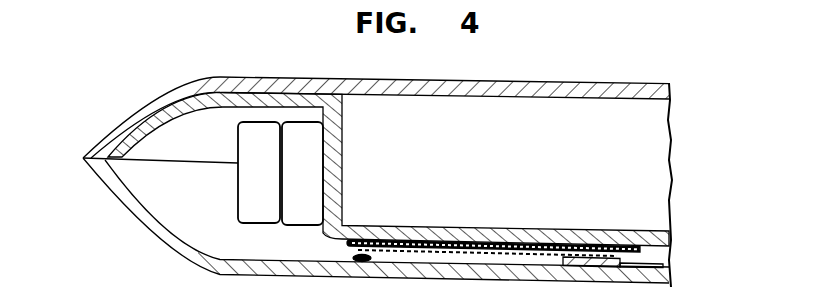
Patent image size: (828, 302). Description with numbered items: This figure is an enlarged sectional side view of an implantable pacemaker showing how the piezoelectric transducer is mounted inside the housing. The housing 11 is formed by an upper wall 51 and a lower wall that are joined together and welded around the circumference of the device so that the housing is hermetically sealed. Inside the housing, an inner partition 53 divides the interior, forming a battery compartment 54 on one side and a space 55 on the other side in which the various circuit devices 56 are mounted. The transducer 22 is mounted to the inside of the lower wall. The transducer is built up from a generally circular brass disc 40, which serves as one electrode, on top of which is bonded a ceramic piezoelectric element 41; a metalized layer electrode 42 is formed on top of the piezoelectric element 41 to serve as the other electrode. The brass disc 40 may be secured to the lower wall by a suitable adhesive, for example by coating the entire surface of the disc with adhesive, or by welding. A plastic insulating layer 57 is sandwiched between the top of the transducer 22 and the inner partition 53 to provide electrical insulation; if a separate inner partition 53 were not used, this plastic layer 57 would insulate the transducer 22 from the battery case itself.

The housing 11 is at (262, 76).
The upper wall 51 is at (497, 80).
The inner partition 53 is at (420, 226).
The battery compartment 54 is at (550, 99).
The space 55 is at (190, 204).
The circuit devices 56 is at (292, 213).
The metalized layer electrode 42 is at (510, 247).
The brass disc 40 is at (375, 260).
The ceramic piezoelectric element 41 is at (562, 267).
The plastic insulating layer 57 is at (326, 238).
The transducer 22 is at (347, 268).